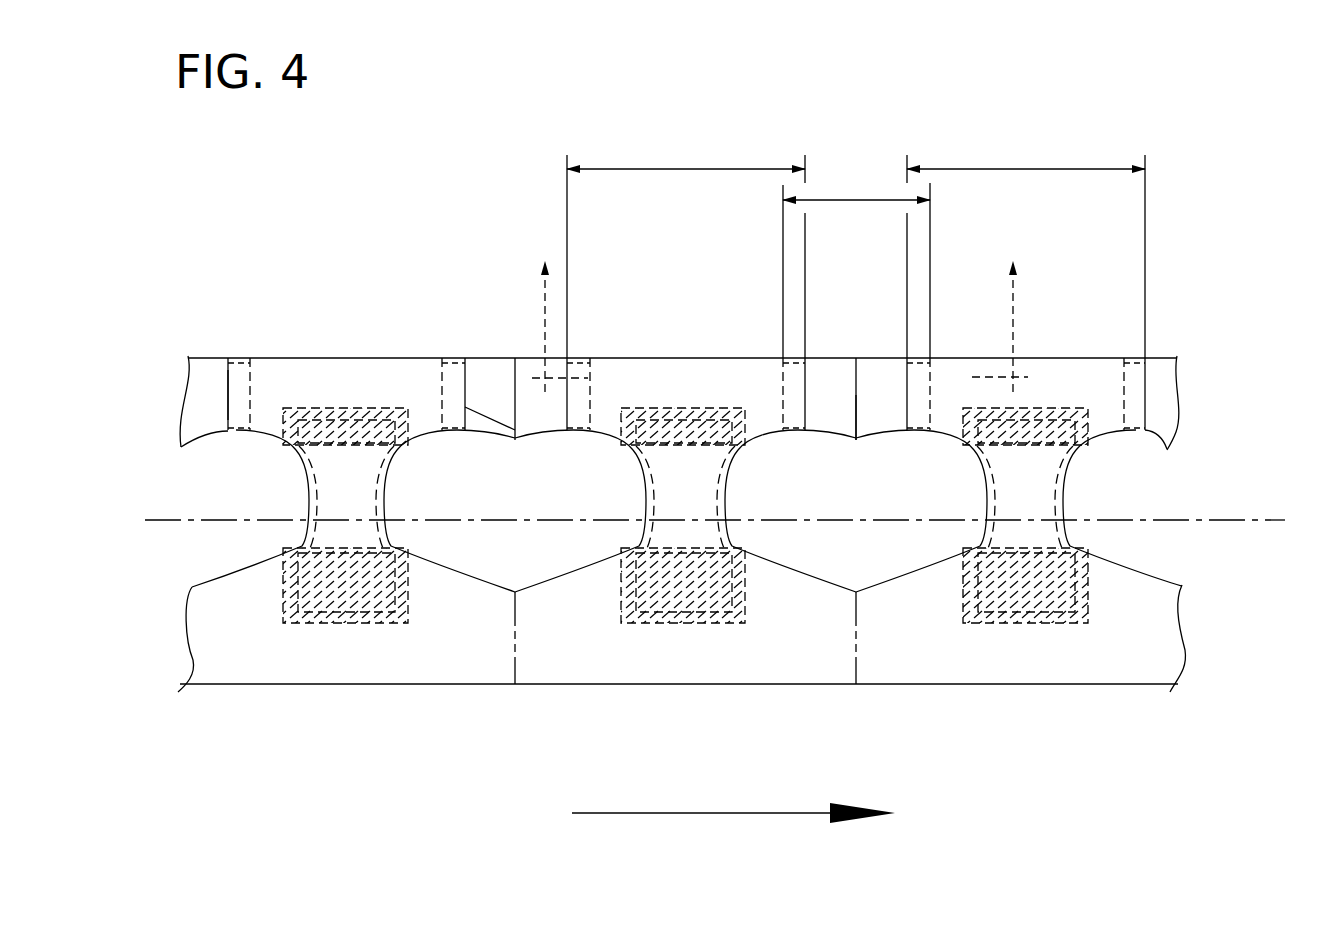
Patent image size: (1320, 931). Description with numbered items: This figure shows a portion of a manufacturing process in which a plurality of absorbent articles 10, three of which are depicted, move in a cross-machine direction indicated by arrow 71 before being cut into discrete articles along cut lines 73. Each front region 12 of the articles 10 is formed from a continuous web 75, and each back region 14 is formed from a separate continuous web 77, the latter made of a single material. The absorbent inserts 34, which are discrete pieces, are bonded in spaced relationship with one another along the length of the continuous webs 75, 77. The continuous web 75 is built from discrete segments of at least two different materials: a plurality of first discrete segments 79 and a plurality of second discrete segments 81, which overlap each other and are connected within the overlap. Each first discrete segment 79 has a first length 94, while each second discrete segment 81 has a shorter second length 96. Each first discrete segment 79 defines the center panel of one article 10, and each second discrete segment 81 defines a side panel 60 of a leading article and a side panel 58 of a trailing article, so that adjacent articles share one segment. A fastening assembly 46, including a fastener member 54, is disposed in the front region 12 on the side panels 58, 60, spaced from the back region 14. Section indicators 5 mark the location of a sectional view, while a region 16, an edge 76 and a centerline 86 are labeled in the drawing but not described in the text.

The section line 5- 5 is at (780, 305).
The absorbent article 10 is at (678, 402).
The front region 12 is at (372, 380).
The back region 14 is at (681, 684).
The neck region 16 is at (345, 472).
The absorbent insert 34 is at (292, 473).
The fastening assembly 46 is at (222, 396).
The fastener member 54 is at (810, 381).
The side panel 58 is at (465, 363).
The side panel 60 is at (226, 367).
The arrow 71 is at (716, 818).
The cut line 73 is at (465, 407).
The continuous web 75 is at (289, 354).
The second longitudinal edge 76 is at (1013, 686).
The continuous web 77 is at (289, 690).
The first discrete segment 79 is at (324, 377).
The second discrete segment 81 is at (182, 366).
The longitudinal centerline 86 is at (1214, 517).
The first length 94 is at (682, 168).
The second length 96 is at (829, 199).